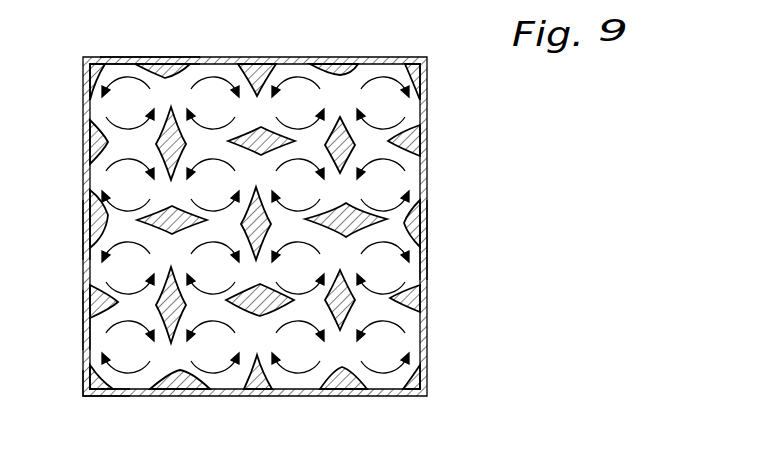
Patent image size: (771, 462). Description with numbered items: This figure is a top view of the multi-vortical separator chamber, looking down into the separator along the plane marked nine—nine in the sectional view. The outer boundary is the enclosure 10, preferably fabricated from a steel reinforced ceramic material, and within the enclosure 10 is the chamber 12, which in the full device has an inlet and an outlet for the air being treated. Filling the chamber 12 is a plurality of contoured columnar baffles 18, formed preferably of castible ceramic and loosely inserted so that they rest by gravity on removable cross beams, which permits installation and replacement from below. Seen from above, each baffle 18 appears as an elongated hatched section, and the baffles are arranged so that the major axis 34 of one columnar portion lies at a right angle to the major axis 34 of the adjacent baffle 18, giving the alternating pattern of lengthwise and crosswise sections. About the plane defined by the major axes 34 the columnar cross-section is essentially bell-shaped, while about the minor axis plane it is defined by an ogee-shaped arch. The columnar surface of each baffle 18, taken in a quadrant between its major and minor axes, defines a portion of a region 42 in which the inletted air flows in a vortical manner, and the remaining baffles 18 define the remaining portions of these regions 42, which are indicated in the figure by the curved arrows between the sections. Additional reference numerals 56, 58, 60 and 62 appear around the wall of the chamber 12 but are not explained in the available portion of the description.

The enclosure 10 is at (349, 55).
The chamber 12 is at (303, 233).
The contoured columnar baffles 18 is at (259, 303).
The major axis 34 is at (250, 138).
The region of vortical flow 42 is at (302, 273).
The left wall 56 is at (90, 227).
The lower left wall 58 is at (86, 315).
The bottom wall corner 60 is at (94, 391).
The top wall 62 is at (130, 58).